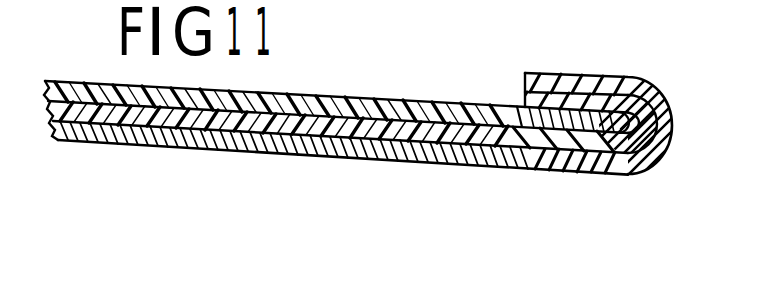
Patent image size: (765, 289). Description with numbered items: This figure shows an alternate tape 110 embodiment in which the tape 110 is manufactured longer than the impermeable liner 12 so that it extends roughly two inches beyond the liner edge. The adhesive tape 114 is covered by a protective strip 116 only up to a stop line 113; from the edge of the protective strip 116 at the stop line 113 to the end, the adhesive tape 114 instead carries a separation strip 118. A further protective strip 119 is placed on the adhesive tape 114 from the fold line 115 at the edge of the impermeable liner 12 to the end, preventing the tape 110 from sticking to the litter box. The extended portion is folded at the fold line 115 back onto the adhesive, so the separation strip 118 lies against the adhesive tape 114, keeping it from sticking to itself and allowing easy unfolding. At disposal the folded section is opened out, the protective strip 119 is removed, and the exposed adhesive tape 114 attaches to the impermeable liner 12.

The impermeable liner 12 is at (431, 154).
The tape 110 is at (638, 188).
The stop line 113 is at (518, 108).
The adhesive tape 114 is at (290, 121).
The fold line 115 is at (616, 172).
The protective strip 116 is at (377, 107).
The separation strip 118 is at (533, 172).
The protective strip 119 is at (640, 85).